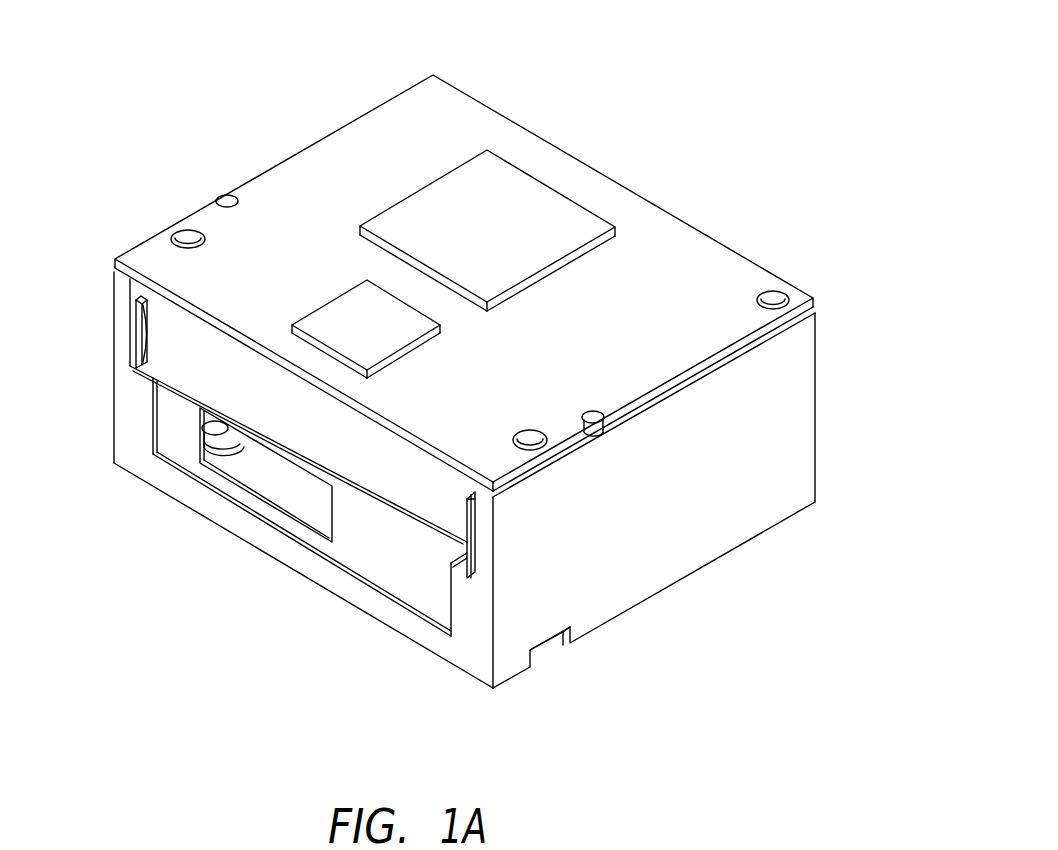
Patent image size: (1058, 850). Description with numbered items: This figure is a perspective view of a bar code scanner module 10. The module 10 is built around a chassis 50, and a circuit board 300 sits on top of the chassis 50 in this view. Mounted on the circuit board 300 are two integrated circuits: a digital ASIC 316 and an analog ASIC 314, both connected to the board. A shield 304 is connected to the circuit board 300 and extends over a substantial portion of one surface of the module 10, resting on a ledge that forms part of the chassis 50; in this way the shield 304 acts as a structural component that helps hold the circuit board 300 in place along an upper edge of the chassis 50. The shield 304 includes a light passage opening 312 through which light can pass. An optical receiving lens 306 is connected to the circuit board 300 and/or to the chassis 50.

The bar code scanner module 10 is at (684, 138).
The chassis 50 is at (673, 497).
The third circuit board 300 is at (628, 321).
The shield 304 is at (393, 575).
The optical receiving lens 306 is at (163, 332).
The light passage opening 312 is at (283, 483).
The analog ASIC 314 is at (333, 297).
The digital ASIC 316 is at (360, 227).